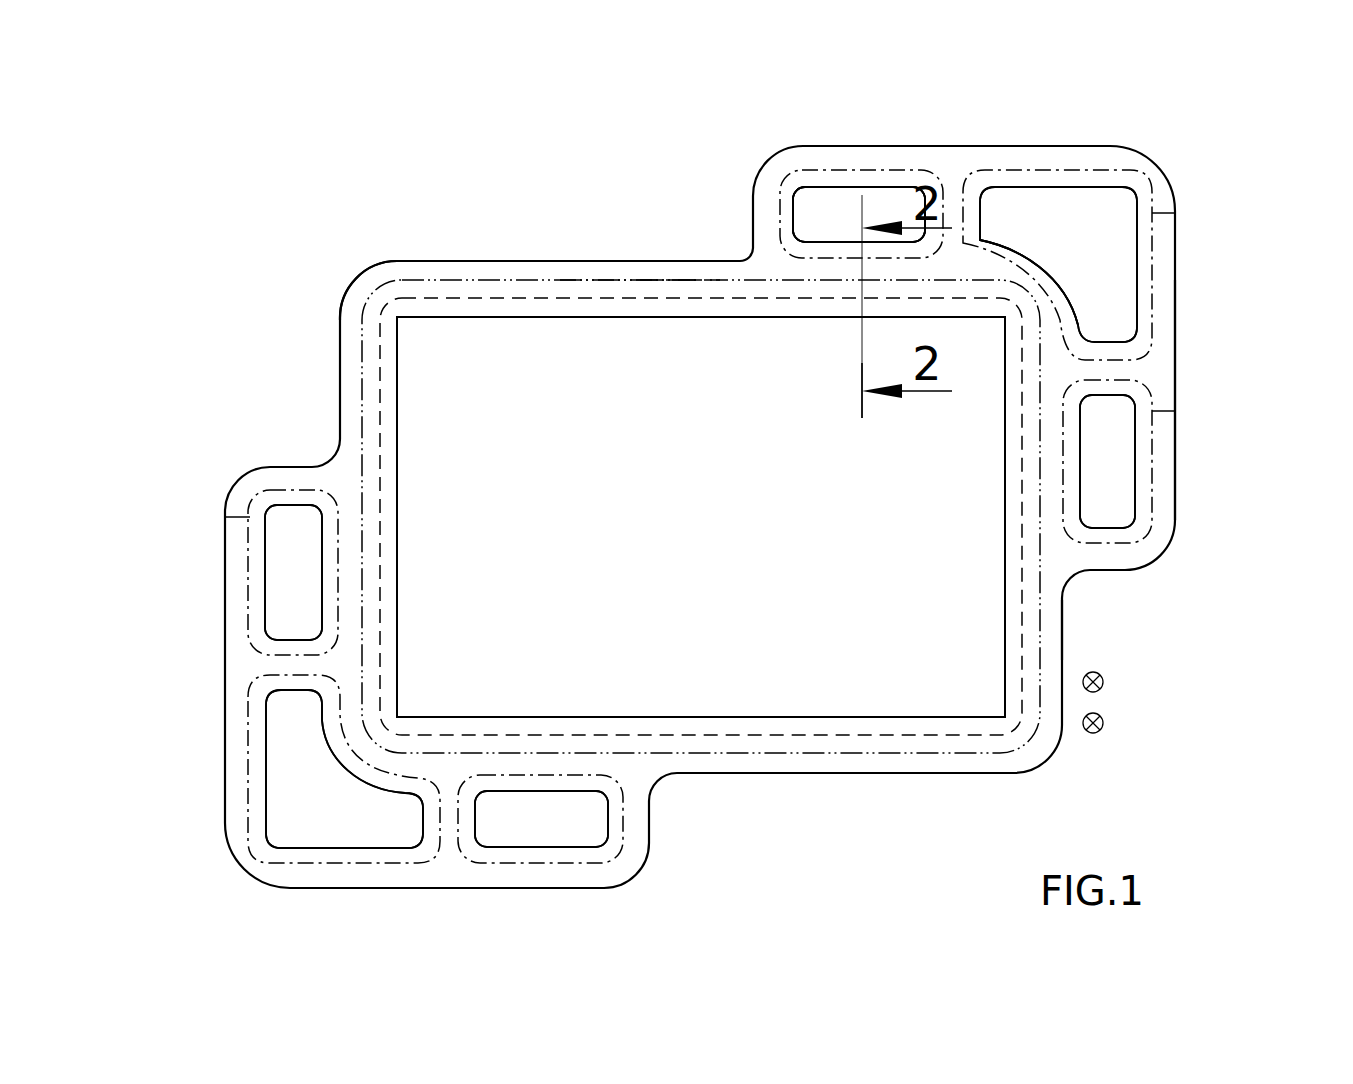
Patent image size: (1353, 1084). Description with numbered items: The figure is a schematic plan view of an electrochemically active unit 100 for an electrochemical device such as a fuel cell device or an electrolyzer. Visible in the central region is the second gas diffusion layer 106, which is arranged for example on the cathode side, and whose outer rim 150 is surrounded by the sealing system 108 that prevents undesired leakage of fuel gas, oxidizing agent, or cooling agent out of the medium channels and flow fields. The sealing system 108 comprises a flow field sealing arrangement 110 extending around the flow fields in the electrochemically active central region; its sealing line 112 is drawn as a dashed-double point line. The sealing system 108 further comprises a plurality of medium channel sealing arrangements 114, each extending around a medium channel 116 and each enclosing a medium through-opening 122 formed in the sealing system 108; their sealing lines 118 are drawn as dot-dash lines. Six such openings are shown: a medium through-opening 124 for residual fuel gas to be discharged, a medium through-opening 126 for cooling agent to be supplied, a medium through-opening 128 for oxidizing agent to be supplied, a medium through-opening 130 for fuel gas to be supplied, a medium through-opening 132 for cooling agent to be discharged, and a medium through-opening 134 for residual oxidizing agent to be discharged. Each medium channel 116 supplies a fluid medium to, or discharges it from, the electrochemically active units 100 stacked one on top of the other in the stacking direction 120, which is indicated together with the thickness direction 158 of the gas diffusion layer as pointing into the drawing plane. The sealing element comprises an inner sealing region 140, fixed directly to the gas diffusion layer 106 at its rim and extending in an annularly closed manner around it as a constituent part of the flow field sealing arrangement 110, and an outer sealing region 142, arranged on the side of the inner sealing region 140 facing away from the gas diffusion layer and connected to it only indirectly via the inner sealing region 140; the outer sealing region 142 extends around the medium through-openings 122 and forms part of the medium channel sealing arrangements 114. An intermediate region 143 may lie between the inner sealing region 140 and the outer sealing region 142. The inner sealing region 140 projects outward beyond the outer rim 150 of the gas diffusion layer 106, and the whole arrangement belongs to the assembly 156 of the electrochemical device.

The electrochemically active unit 100 is at (1130, 137).
The second gas diffusion layer 106 is at (663, 529).
The sealing system 108 is at (497, 270).
The flow field sealing arrangement 110 is at (630, 270).
The sealing line 112 is at (677, 280).
The medium channel sealing arrangement 114 is at (880, 160).
The medium channel 116 is at (807, 188).
The sealing line 118 is at (838, 172).
The stacking direction 120 is at (1104, 683).
The medium through-opening 122 is at (807, 224).
The medium through-opening 124 is at (864, 214).
The medium through-opening 126 is at (1088, 306).
The medium through-opening 128 is at (1088, 510).
The medium through-opening 130 is at (545, 833).
The medium through-opening 132 is at (320, 833).
The medium through-opening 134 is at (273, 623).
The inner sealing region 140 is at (733, 293).
The outer sealing region 142 is at (1165, 300).
The intermediate region 143 is at (1085, 331).
The outer rim 150 is at (558, 300).
The assembly 156 is at (362, 262).
The thickness direction 158 is at (1104, 724).